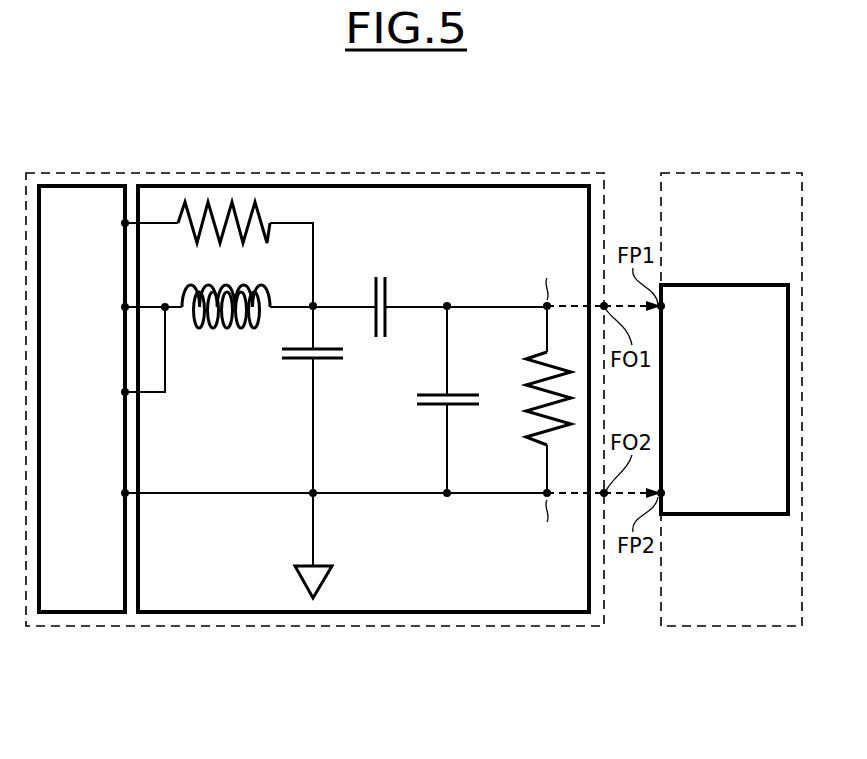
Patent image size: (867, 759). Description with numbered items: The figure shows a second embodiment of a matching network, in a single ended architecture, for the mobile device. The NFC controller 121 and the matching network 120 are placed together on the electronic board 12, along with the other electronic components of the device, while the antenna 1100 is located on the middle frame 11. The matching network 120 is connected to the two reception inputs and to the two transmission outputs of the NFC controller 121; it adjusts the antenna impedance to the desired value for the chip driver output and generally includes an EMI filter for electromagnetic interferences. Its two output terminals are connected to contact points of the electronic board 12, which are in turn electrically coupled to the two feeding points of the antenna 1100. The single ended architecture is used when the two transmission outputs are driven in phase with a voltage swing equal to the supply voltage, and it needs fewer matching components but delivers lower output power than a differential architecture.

The electronic board 12 is at (315, 627).
The middle frame 11 is at (733, 627).
The NFC controller 121 is at (80, 186).
The matching network 120 is at (363, 186).
The antenna 1100 is at (722, 284).